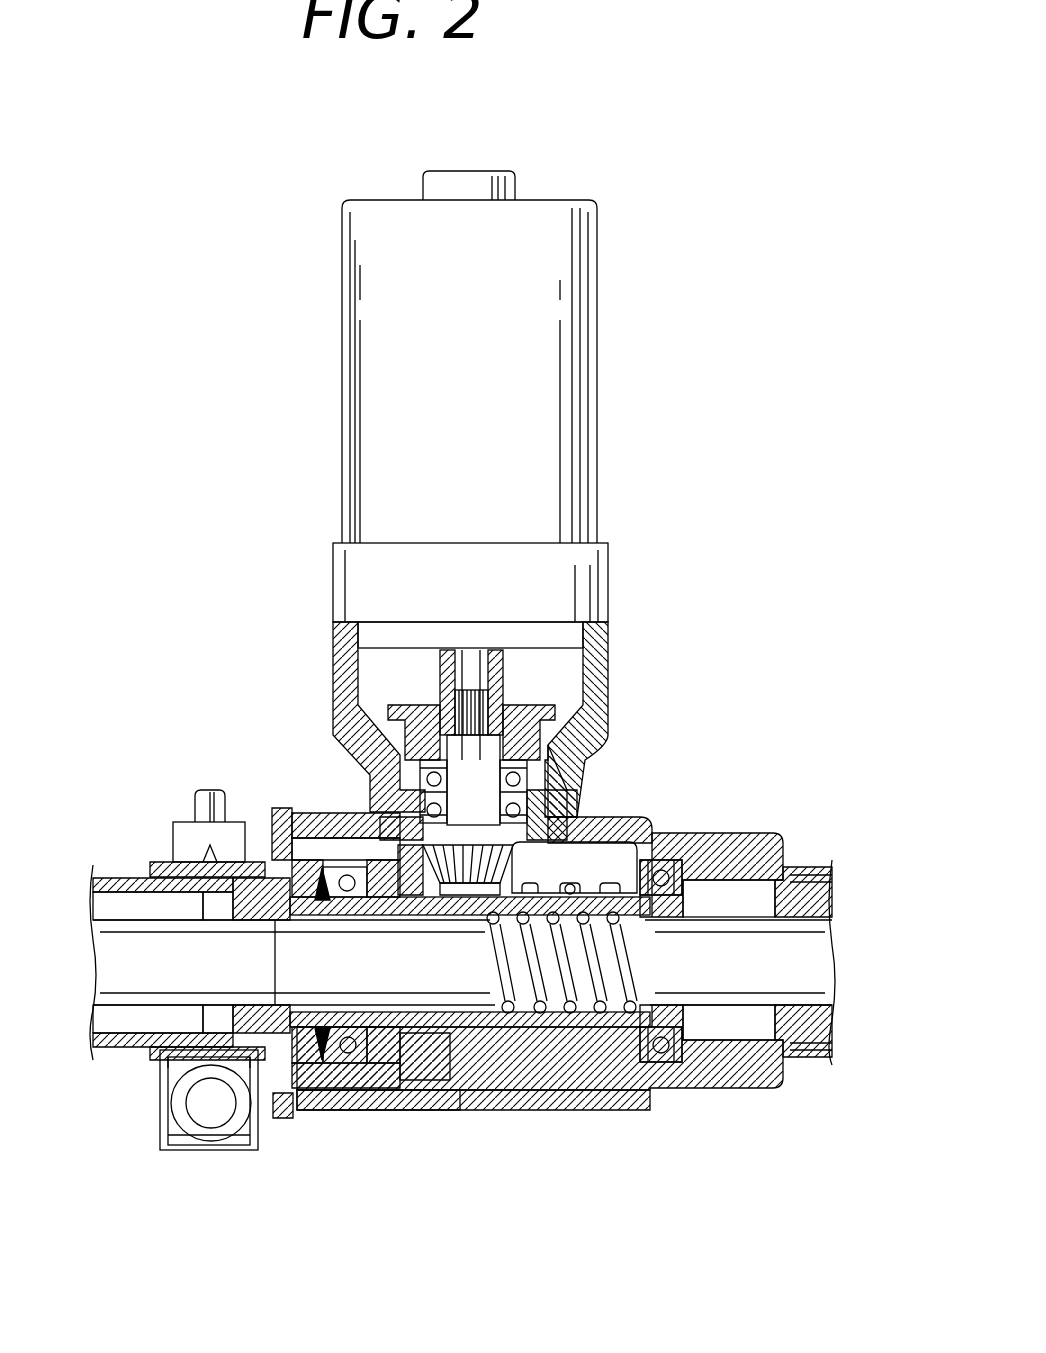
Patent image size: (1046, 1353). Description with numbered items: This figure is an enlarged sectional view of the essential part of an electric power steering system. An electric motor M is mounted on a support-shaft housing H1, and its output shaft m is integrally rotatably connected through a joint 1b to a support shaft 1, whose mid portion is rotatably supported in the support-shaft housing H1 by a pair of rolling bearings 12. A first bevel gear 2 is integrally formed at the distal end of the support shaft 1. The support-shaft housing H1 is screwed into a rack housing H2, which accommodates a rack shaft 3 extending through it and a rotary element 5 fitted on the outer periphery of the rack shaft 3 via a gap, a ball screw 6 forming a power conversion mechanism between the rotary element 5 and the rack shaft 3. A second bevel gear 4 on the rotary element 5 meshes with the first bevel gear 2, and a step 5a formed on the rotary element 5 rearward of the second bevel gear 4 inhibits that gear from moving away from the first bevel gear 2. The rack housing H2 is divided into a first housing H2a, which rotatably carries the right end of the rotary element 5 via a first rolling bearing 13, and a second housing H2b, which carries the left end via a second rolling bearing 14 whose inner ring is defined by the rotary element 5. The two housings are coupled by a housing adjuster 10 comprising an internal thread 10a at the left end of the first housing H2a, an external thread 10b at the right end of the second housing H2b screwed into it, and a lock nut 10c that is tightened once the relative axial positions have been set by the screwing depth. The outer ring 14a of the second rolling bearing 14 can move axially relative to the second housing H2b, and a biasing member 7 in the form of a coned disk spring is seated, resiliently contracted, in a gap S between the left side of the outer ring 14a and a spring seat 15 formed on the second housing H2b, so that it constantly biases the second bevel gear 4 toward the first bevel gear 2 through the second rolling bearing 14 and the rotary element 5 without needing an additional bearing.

The electric motor M is at (555, 333).
The support-shaft housing H1 is at (608, 645).
The joint 1b is at (443, 663).
The output shaft m is at (478, 672).
The support shaft 1 is at (607, 696).
The rolling bearings 12 is at (583, 775).
The first bevel gear 2 is at (585, 808).
The first rolling bearing 13 is at (715, 835).
The first housing H2a is at (778, 835).
The rack housing H2 is at (690, 1092).
The rack shaft 3 is at (712, 1005).
The rotary element 5 is at (513, 1087).
The ball screw 6 is at (628, 1090).
The step 5a is at (402, 1095).
The second bevel gear 4 is at (415, 1088).
The second rolling bearing 14 is at (358, 1100).
The outer ring 14a is at (352, 1092).
The spring seat 15 is at (343, 1028).
The housing adjuster 10 is at (355, 812).
The internal thread 10a is at (313, 813).
The external thread 10b is at (273, 812).
The second housing H2b is at (290, 820).
The biasing member 7 is at (263, 858).
The gap S is at (218, 1065).
The lock nut 10c is at (288, 1120).